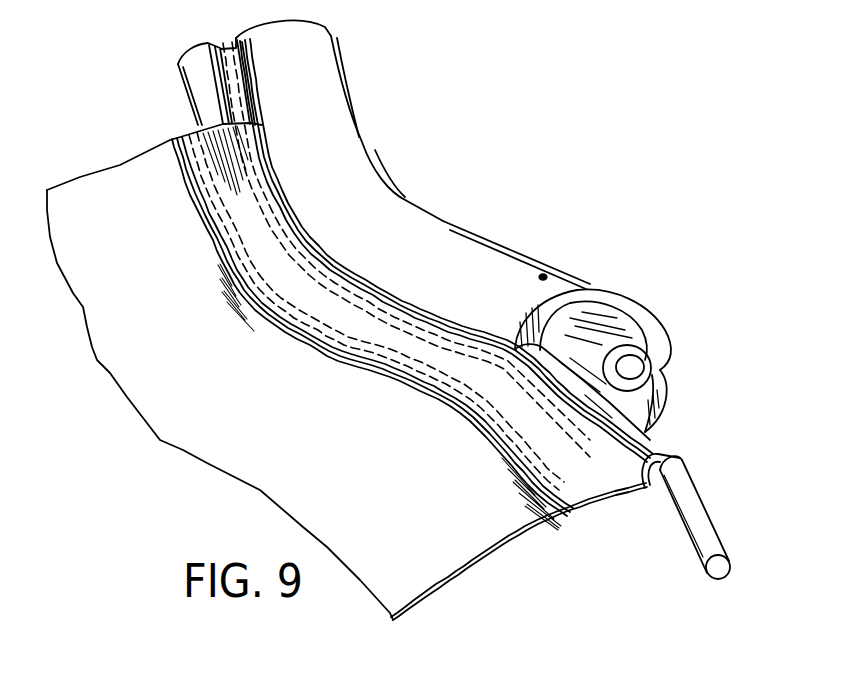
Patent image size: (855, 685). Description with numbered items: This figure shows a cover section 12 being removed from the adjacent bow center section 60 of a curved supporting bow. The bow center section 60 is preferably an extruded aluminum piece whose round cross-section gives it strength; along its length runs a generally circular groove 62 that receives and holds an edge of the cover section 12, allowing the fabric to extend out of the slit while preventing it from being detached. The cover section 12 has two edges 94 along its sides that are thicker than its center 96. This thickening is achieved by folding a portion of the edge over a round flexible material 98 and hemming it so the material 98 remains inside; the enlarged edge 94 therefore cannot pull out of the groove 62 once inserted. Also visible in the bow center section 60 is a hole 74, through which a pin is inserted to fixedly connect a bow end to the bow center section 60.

The cover section 12 is at (447, 578).
The bow center section 60 is at (463, 283).
The groove 62 is at (632, 371).
The hole 74 is at (548, 276).
The edge 94 is at (585, 487).
The center 96 is at (371, 476).
The round flexible material 98 is at (707, 572).